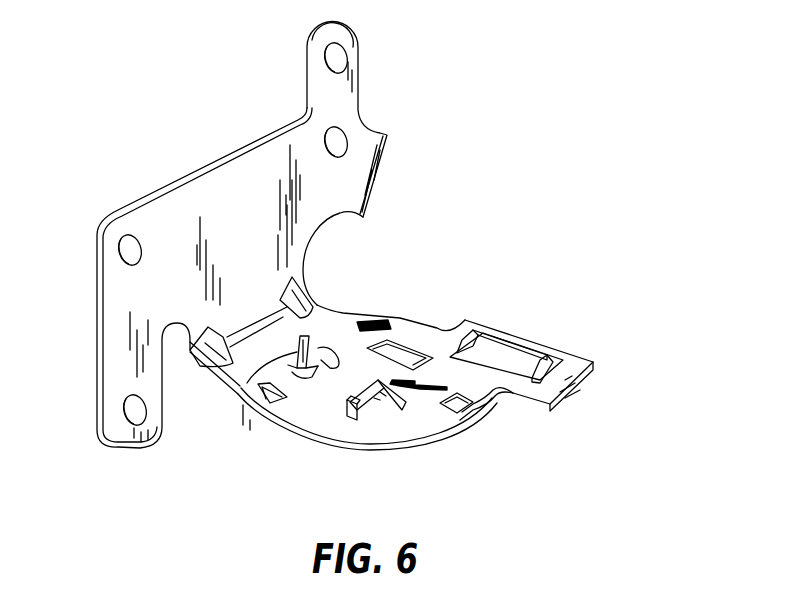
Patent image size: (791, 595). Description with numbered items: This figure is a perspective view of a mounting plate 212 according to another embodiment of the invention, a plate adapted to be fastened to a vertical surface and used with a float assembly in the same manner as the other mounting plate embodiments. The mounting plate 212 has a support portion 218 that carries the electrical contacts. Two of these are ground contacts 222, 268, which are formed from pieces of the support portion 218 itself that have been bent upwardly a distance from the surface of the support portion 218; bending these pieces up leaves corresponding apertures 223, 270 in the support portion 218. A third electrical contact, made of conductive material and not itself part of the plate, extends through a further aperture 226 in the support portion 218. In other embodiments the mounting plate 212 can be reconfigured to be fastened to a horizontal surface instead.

The mounting plate 212 is at (229, 222).
The support portion 218 is at (303, 408).
The ground contact 222 is at (247, 383).
The aperture 223 is at (317, 358).
The aperture 226 is at (435, 328).
The ground contact 268 is at (377, 402).
The aperture 270 is at (348, 400).